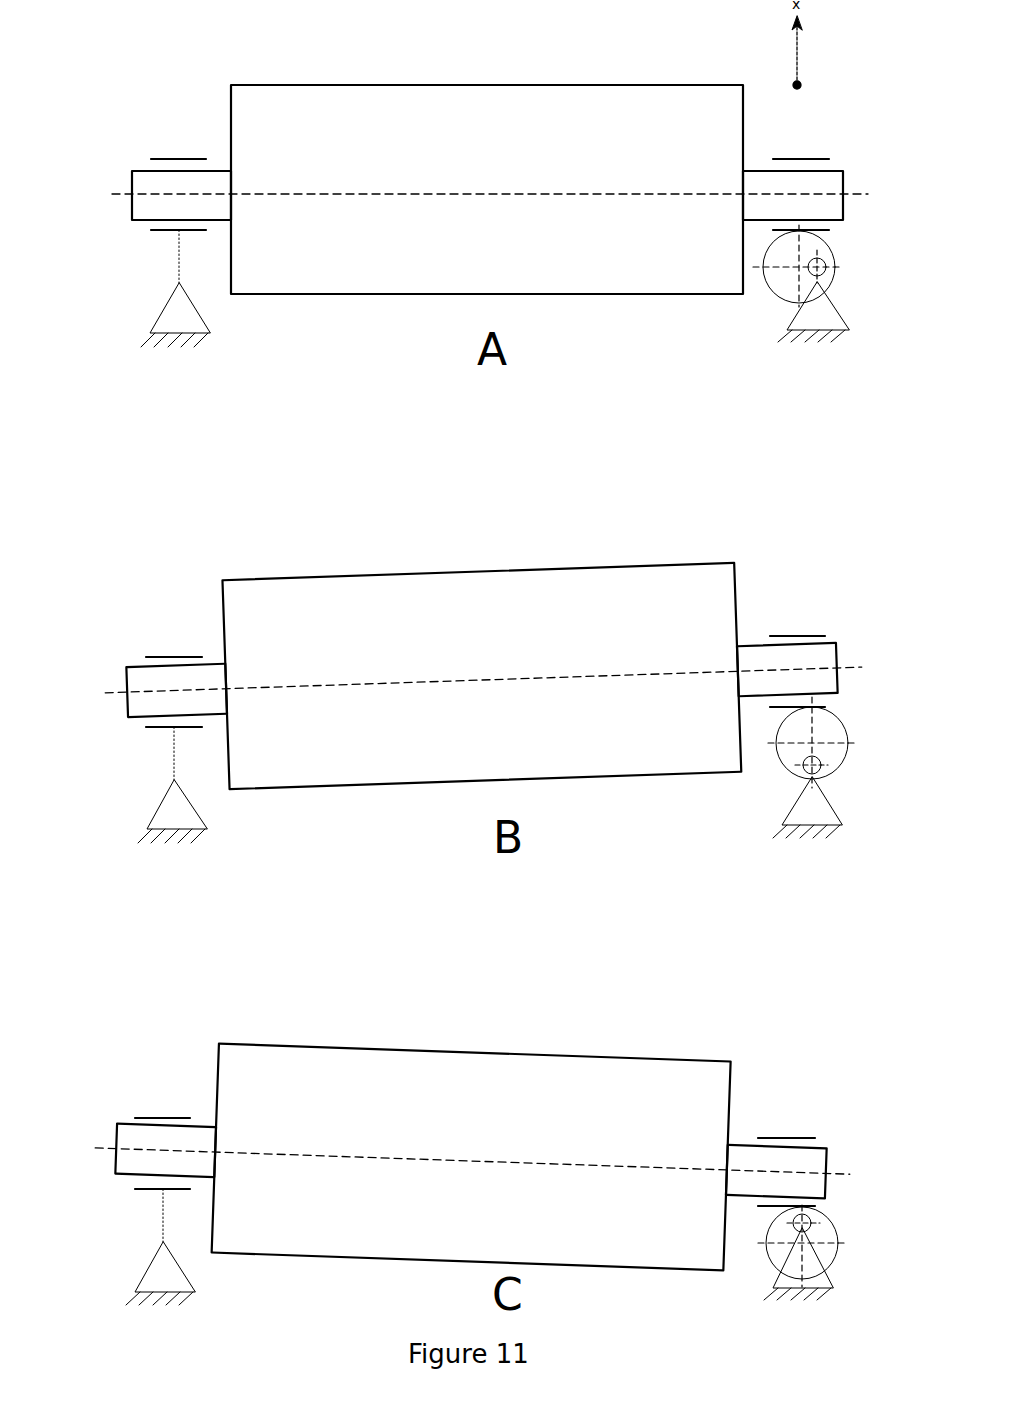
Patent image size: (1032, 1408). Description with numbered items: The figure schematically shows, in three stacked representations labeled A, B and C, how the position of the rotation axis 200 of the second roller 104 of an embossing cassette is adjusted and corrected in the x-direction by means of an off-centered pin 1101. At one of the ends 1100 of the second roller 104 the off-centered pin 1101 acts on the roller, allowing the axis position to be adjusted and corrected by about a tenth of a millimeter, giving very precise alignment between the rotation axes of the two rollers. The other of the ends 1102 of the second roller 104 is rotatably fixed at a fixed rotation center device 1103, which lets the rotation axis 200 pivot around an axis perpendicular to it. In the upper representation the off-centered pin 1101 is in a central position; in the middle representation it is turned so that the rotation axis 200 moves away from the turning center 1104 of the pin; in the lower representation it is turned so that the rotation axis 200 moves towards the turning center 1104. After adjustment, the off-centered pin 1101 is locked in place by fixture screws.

The second roller 104 is at (327, 83).
The rotation axis 200 is at (468, 193).
The end of the second roller 1100 is at (837, 171).
The off-centered pin 1101 is at (776, 293).
The other end of the second roller 1102 is at (132, 205).
The fixed rotation center device 1103 is at (180, 258).
The turning center of the off-centered pin 1104 is at (820, 770).